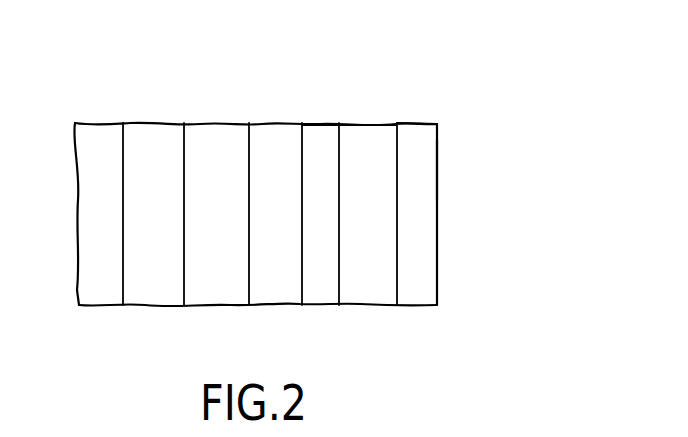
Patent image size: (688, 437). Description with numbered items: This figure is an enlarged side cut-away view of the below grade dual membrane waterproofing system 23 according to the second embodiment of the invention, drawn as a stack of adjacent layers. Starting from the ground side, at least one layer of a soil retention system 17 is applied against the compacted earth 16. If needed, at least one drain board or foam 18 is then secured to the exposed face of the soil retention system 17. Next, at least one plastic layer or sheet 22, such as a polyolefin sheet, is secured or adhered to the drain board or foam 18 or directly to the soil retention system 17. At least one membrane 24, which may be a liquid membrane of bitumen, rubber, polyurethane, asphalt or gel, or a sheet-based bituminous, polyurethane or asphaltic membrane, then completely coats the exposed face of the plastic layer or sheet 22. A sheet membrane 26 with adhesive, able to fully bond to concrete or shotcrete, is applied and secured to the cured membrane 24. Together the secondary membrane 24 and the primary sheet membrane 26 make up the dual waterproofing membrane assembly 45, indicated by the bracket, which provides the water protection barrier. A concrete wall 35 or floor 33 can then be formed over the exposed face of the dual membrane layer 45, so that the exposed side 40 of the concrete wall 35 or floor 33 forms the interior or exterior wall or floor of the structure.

The compacted earth 16 is at (98, 140).
The soil retention system 17 is at (151, 140).
The drain board or foam 18 is at (209, 138).
The plastic layer or sheet 22 is at (263, 140).
The below grade dual membrane waterproofing system 23 is at (533, 60).
The membrane 24 is at (317, 138).
The sheet membrane 26 is at (369, 138).
The floor 33 is at (417, 133).
The concrete wall 35 is at (427, 180).
The exposed side 40 is at (437, 260).
The dual waterproofing membrane assembly 45 is at (301, 314).